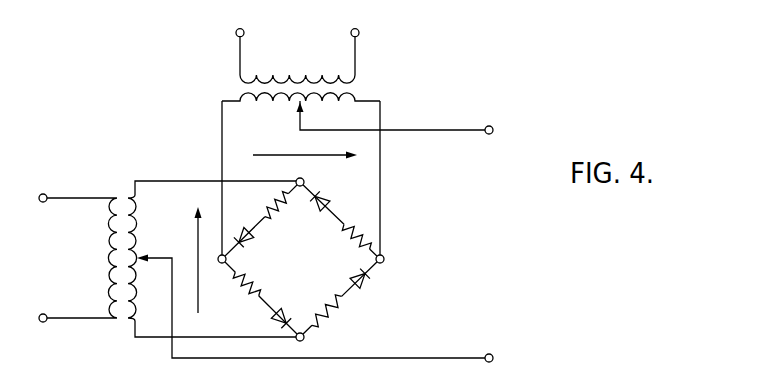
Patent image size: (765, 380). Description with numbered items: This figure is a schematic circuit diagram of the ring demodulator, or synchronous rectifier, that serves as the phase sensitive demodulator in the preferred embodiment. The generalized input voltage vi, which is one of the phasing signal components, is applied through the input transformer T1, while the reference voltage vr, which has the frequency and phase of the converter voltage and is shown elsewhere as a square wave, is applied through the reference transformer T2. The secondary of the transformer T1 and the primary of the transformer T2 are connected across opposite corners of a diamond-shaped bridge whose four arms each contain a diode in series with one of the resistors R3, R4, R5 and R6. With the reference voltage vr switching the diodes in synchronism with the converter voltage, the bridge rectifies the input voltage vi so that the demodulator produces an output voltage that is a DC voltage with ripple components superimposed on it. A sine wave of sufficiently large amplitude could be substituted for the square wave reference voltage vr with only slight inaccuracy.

The input transformer T1 is at (266, 253).
The reference transformer T2 is at (357, 81).
The resistor R3 is at (251, 278).
The resistor R4 is at (283, 213).
The resistor R5 is at (352, 243).
The resistor R6 is at (317, 306).
The generalized input voltage vi is at (49, 261).
The reference voltage vr is at (302, 34).